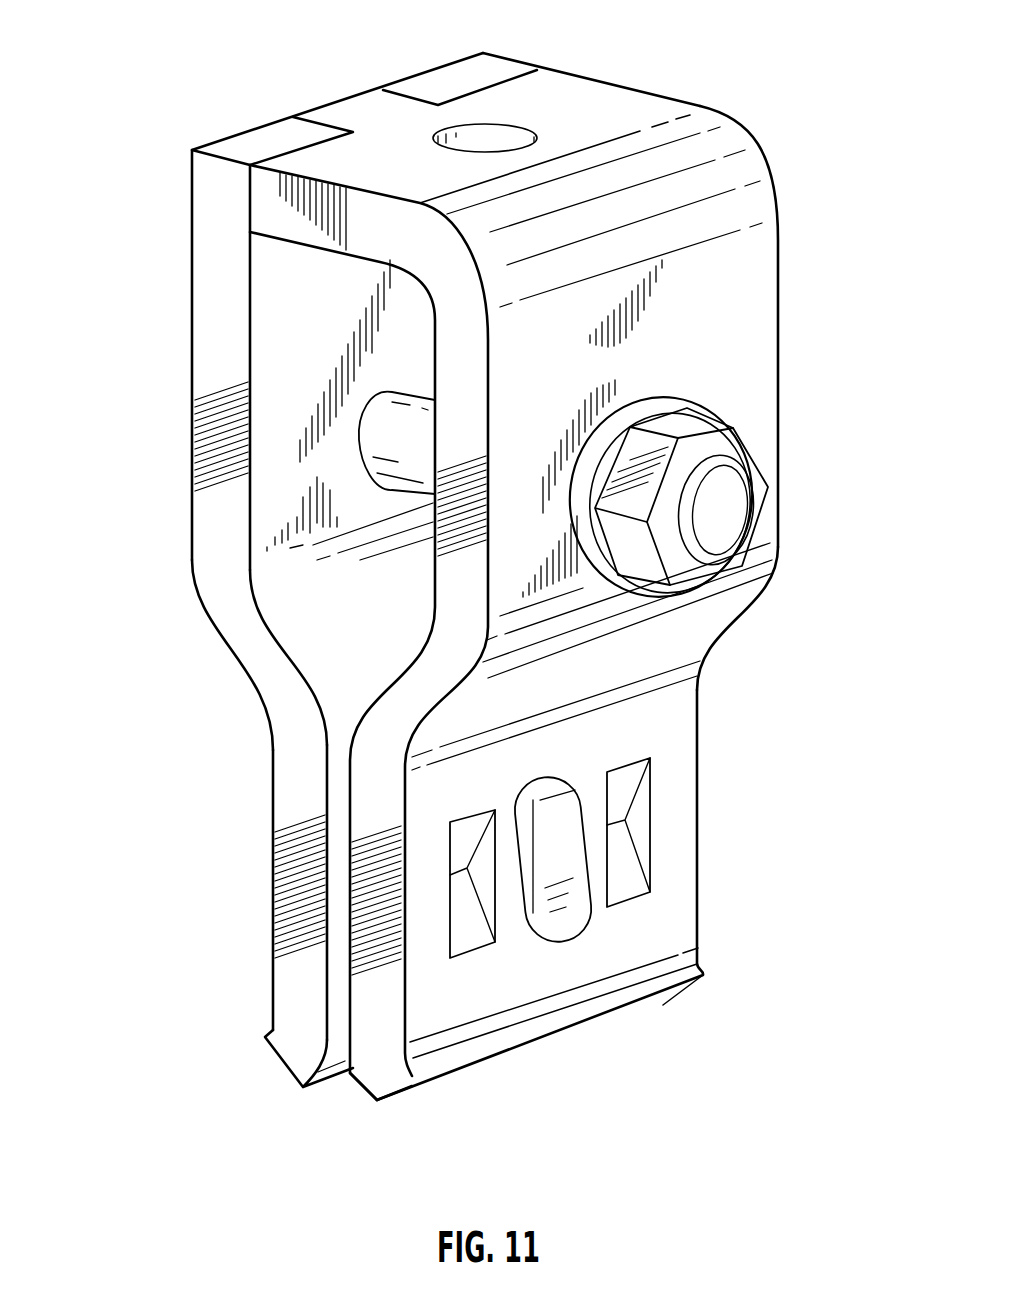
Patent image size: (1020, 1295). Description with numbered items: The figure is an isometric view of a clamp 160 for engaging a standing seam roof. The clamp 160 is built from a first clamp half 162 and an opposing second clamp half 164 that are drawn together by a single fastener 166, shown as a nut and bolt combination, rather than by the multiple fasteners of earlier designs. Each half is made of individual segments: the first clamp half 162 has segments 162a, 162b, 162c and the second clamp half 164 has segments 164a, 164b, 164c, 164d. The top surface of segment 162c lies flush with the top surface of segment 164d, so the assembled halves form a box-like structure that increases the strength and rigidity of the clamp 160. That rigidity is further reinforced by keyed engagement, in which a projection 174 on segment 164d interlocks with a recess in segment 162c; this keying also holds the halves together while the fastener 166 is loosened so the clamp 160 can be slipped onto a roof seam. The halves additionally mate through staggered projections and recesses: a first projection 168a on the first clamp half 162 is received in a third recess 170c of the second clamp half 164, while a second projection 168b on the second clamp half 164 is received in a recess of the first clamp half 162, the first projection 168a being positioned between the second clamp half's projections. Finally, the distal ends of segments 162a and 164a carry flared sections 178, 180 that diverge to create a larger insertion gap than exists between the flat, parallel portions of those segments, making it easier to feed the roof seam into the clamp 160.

The clamp 160 is at (150, 117).
The first clamp half 162 is at (182, 320).
The segment 162a is at (281, 847).
The segment 162b is at (264, 652).
The segment 162c is at (207, 232).
The second clamp half 164 is at (797, 362).
The segment 164a is at (685, 743).
The segment 164b is at (737, 625).
The segment 164c is at (758, 262).
The segment 164d is at (655, 113).
The fastener 166 is at (730, 508).
The first projection 168a is at (642, 822).
The second projection 168b is at (488, 896).
The third recess 170c is at (568, 864).
The projection 174 is at (352, 104).
The flared section 178 is at (280, 1067).
The flared section 180 is at (400, 1084).